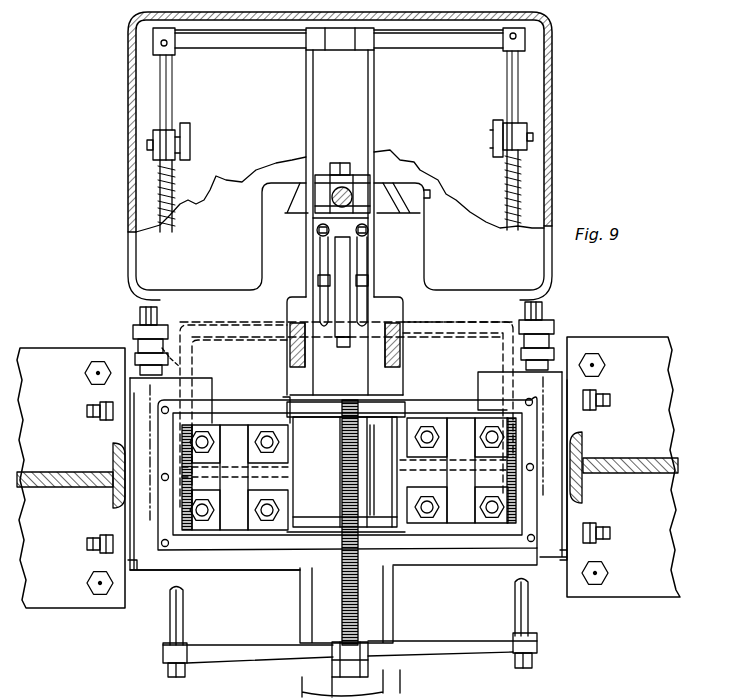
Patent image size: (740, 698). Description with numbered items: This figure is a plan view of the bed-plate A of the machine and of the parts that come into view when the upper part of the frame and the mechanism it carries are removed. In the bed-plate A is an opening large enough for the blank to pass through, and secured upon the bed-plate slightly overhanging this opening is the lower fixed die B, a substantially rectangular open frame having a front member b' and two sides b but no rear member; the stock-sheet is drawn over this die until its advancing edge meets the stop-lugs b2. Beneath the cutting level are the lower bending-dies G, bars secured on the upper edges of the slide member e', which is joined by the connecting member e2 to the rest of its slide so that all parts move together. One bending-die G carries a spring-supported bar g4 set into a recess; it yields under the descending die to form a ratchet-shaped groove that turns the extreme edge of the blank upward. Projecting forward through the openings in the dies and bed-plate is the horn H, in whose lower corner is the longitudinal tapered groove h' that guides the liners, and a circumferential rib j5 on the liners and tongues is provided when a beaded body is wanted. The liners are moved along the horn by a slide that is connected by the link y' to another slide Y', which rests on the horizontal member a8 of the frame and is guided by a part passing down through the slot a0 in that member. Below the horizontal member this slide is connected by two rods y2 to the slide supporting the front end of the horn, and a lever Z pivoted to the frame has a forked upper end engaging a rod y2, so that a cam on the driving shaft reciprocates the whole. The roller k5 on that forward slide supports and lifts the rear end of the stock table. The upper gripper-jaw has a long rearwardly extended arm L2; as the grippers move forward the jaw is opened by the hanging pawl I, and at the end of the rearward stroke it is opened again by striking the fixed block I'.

The slide Y' is at (340, 55).
The link y' is at (340, 222).
The rods y2 is at (172, 82).
The lever Z is at (190, 135).
The horizontal member a8 is at (230, 184).
The slot a0 is at (345, 163).
The fixed block I' is at (322, 275).
The rearwardly-extended arm L2 is at (342, 263).
The pawl I is at (350, 339).
The slide member e2 is at (423, 363).
The lower slide member e' is at (343, 404).
The stop-lugs b2 is at (207, 422).
The sides of fixed die b is at (347, 471).
The bed-plate A is at (348, 472).
The bar g4 is at (188, 478).
The lower bending-dies G is at (349, 474).
The circumferential rib j5 is at (303, 513).
The horn H is at (320, 596).
The tapered groove h' is at (384, 522).
The front member of fixed die b' is at (333, 567).
The lower fixed die B is at (515, 522).
The roller k5 is at (337, 660).